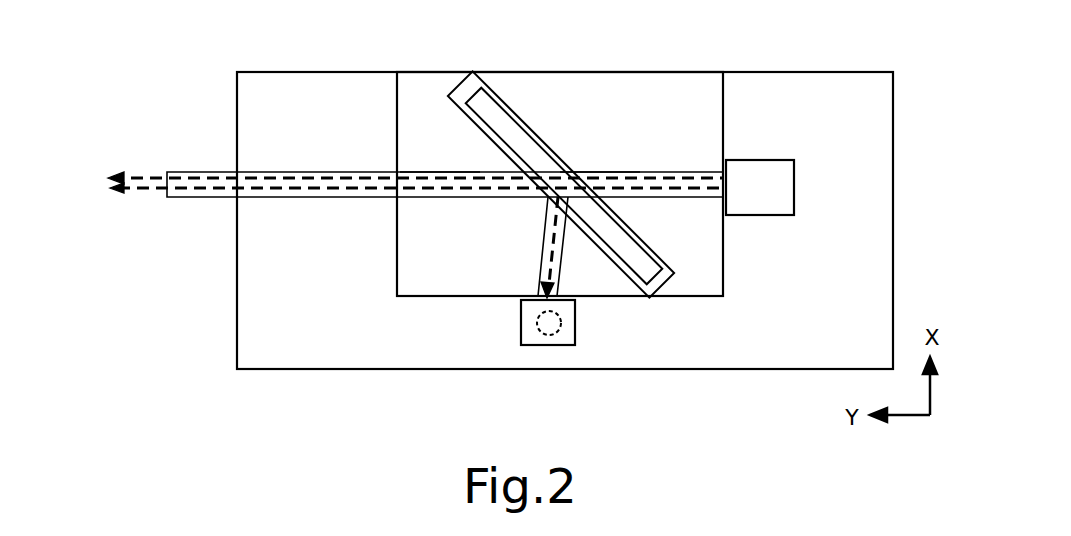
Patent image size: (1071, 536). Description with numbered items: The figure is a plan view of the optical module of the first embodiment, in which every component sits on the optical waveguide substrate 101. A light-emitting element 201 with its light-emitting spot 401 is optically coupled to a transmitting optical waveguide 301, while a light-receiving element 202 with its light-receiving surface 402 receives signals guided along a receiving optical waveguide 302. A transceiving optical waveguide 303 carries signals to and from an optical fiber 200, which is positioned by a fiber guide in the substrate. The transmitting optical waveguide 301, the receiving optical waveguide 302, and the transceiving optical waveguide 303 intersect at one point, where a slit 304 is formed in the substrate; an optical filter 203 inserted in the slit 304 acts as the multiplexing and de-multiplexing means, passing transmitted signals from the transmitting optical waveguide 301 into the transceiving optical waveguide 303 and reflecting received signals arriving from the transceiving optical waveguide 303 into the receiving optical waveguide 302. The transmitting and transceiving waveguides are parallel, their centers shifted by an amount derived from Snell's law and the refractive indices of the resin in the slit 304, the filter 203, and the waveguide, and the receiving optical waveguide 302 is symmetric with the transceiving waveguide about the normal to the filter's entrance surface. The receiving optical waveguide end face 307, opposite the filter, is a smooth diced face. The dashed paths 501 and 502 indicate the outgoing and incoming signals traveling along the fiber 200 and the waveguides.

The optical waveguide substrate 101 is at (843, 73).
The optical fiber 200 is at (253, 172).
The light-emitting element 201 is at (767, 160).
The light-receiving element 202 is at (538, 345).
The optical filter 203 is at (485, 92).
The transmitting optical waveguide 301 is at (587, 173).
The receiving optical waveguide 302 is at (548, 237).
The transceiving optical waveguide 303 is at (440, 172).
The slit 304 is at (452, 95).
The receiving optical waveguide end face 307 is at (548, 300).
The light-emitting spot 401 is at (722, 195).
The light-receiving surface 402 is at (552, 333).
The outgoing light 501 is at (415, 167).
The returning light 502 is at (416, 201).